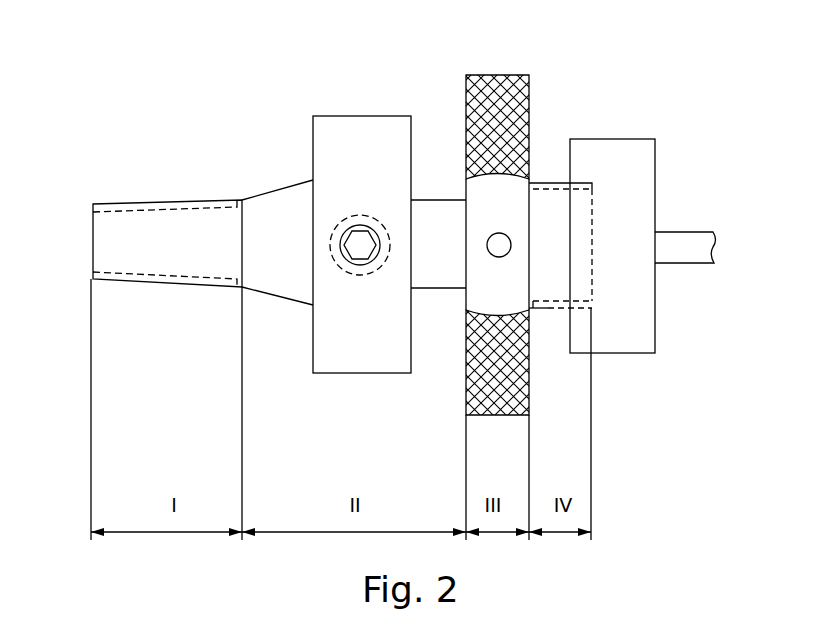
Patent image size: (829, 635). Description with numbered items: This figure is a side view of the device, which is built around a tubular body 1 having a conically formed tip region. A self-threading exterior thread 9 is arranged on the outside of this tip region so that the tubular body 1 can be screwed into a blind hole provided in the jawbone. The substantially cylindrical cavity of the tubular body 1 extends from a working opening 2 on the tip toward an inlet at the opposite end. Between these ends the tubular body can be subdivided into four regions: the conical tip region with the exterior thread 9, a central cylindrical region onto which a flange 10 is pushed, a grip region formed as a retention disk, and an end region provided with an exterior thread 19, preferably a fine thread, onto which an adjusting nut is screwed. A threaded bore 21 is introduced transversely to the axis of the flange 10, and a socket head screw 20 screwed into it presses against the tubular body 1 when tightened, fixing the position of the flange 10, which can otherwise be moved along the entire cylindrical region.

The tubular body 1 is at (452, 290).
The working opening 2 is at (90, 240).
The self-threading exterior thread 9 is at (179, 210).
The flange 10 is at (375, 116).
The exterior thread 19 is at (548, 312).
The socket head screw 20 is at (343, 262).
The threaded bore 21 is at (369, 273).